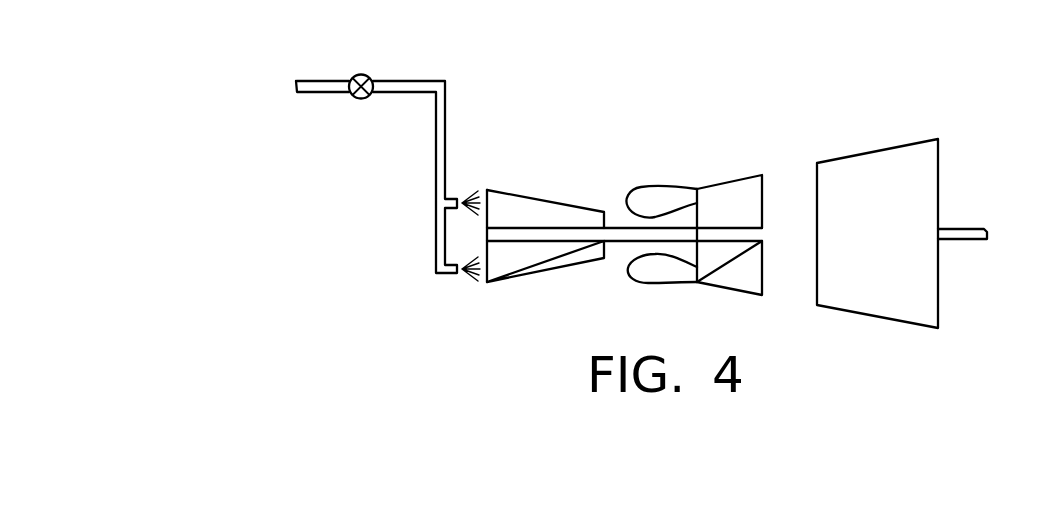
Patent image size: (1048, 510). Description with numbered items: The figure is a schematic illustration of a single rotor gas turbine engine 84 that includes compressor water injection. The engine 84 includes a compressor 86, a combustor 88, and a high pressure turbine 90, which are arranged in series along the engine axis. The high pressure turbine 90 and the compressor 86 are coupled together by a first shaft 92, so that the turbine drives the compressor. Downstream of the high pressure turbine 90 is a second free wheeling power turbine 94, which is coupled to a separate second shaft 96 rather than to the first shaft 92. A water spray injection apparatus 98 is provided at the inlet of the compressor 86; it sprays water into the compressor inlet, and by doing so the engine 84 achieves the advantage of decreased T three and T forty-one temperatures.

The single rotor gas turbine engine 84 is at (853, 111).
The compressor 86 is at (535, 273).
The combustor 88 is at (645, 193).
The high pressure turbine 90 is at (717, 288).
The first shaft 92 is at (617, 228).
The second free wheeling power turbine 94 is at (868, 317).
The second shaft 96 is at (962, 242).
The water spray injection apparatus 98 is at (446, 125).